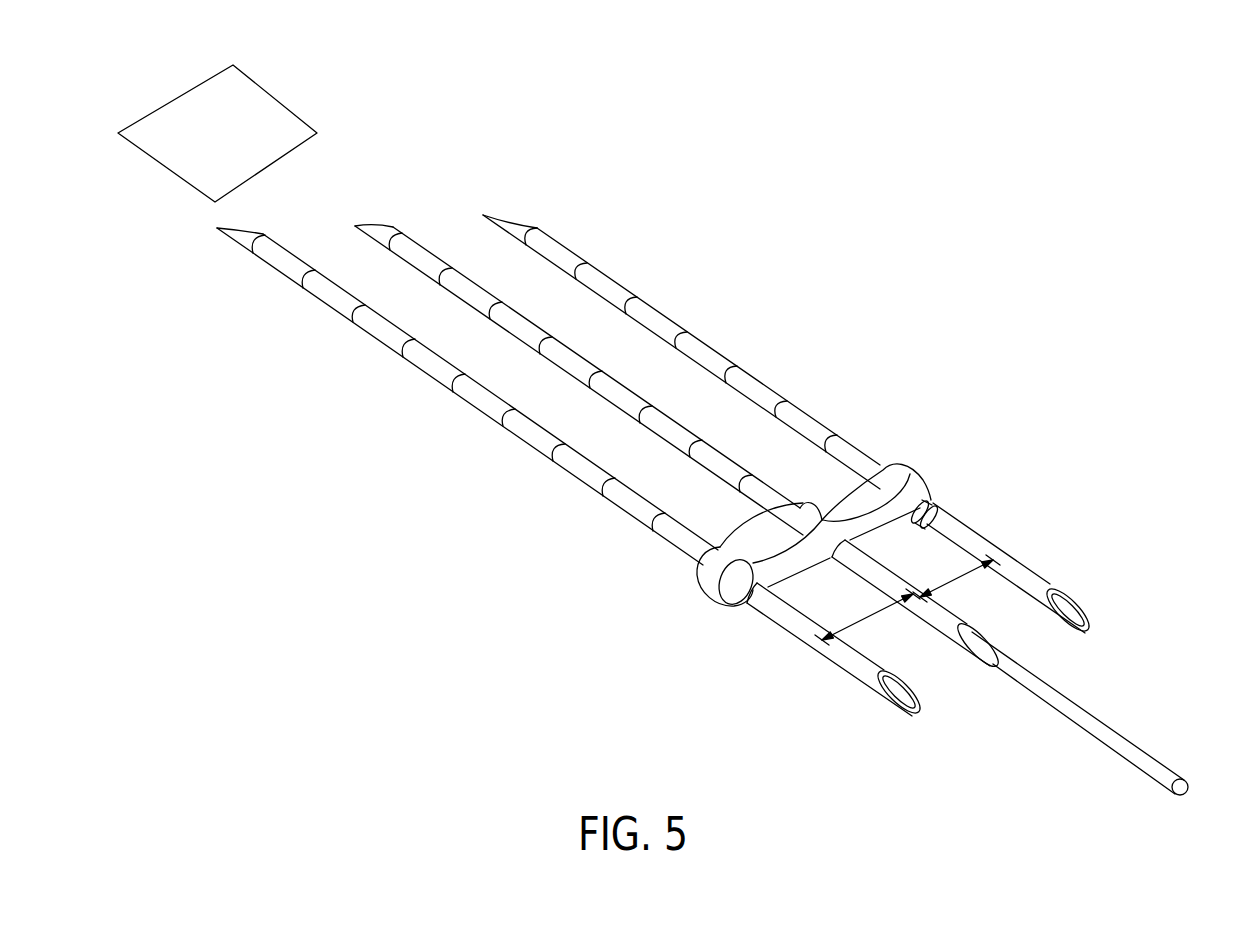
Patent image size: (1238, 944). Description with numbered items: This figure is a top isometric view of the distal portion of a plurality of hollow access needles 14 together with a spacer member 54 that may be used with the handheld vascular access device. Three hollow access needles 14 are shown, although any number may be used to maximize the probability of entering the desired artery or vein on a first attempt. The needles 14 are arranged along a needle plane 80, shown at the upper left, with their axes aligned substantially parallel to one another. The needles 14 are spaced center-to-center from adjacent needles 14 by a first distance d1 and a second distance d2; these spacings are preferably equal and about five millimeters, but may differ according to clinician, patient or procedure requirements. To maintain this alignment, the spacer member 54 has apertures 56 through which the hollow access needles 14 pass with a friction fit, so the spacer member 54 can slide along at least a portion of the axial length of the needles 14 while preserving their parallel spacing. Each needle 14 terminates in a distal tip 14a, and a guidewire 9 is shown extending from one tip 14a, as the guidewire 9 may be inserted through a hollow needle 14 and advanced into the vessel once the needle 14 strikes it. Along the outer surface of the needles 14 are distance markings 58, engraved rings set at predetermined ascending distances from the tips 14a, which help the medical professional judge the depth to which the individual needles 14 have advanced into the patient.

The needle plane 80 is at (280, 108).
The hollow access needle 14 is at (428, 250).
The distance markings 58 is at (733, 370).
The spacer member 54 is at (913, 463).
The apertures 56 is at (934, 504).
The tip 14a is at (1090, 628).
The guidewire 9 is at (1155, 757).
The first distance d1 is at (868, 626).
The second distance d2 is at (947, 590).